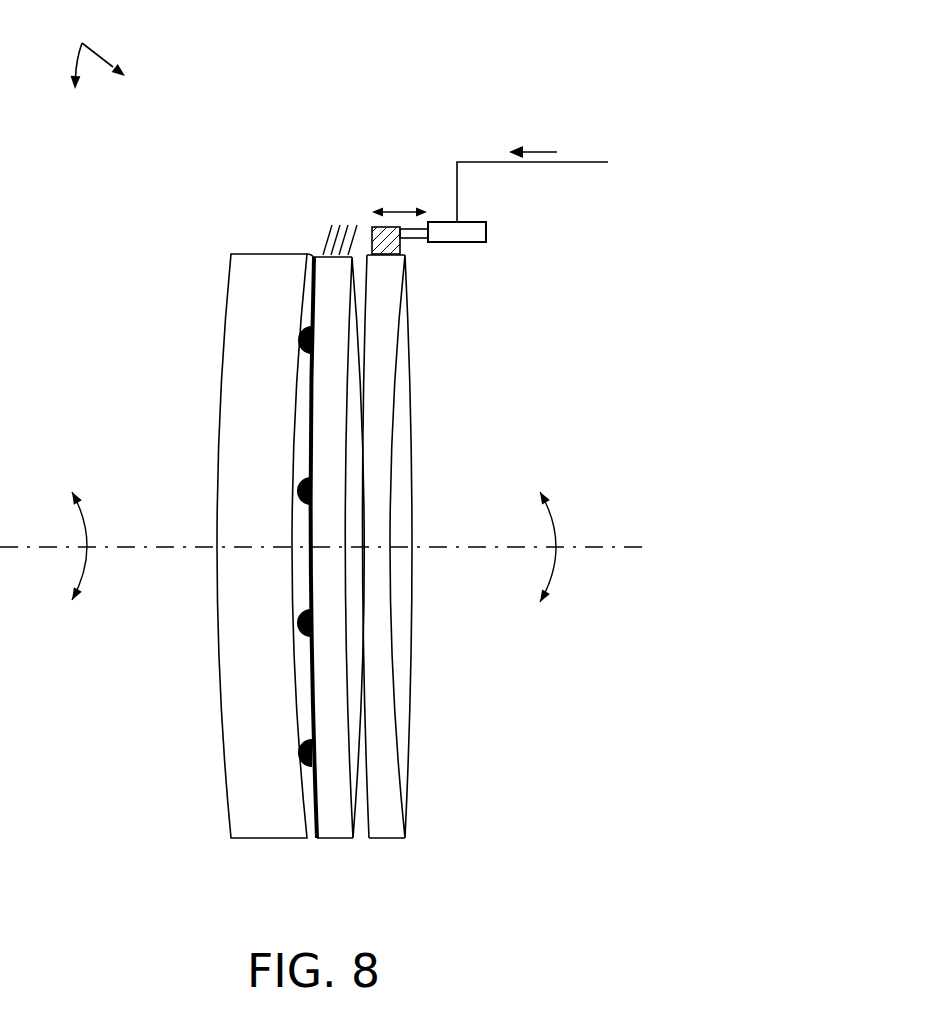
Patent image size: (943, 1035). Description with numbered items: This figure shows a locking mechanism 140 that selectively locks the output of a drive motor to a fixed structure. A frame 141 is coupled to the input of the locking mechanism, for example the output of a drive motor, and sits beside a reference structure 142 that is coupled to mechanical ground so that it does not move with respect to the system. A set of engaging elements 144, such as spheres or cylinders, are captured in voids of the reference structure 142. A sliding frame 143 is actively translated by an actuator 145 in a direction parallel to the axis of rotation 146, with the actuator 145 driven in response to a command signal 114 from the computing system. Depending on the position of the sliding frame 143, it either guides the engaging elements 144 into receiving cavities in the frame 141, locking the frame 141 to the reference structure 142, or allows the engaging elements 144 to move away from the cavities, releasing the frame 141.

The locking mechanism 140 is at (93, 55).
The command signal 114 is at (537, 150).
The actuator 145 is at (470, 222).
The frame 141 is at (243, 692).
The reference structure 142 is at (333, 377).
The engaging elements 144 is at (302, 492).
The sliding frame 143 is at (385, 315).
The axis of rotation 146 is at (592, 549).